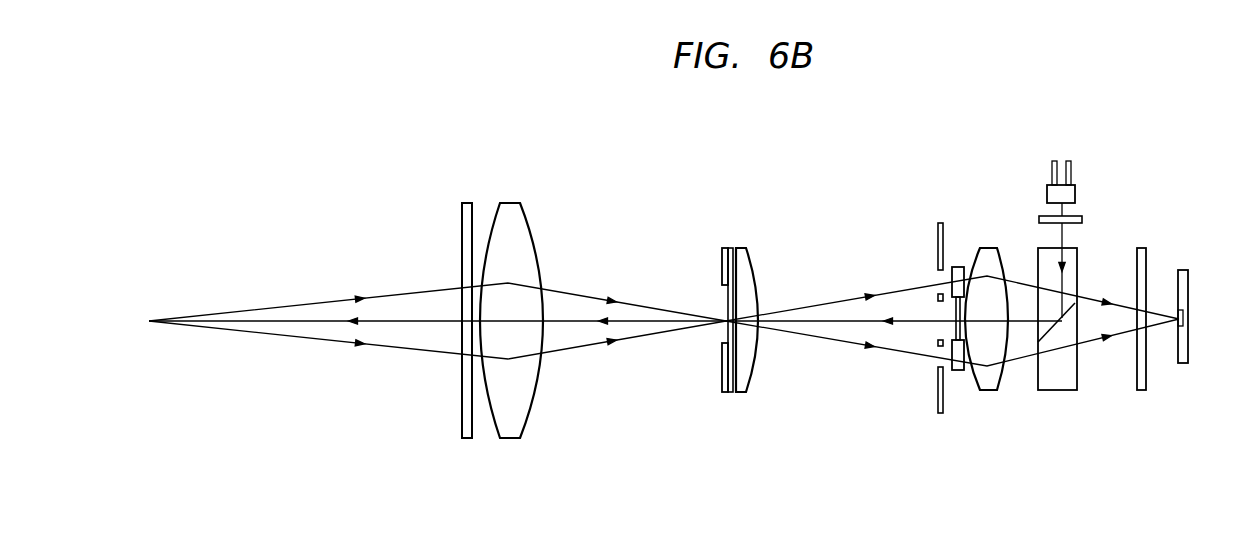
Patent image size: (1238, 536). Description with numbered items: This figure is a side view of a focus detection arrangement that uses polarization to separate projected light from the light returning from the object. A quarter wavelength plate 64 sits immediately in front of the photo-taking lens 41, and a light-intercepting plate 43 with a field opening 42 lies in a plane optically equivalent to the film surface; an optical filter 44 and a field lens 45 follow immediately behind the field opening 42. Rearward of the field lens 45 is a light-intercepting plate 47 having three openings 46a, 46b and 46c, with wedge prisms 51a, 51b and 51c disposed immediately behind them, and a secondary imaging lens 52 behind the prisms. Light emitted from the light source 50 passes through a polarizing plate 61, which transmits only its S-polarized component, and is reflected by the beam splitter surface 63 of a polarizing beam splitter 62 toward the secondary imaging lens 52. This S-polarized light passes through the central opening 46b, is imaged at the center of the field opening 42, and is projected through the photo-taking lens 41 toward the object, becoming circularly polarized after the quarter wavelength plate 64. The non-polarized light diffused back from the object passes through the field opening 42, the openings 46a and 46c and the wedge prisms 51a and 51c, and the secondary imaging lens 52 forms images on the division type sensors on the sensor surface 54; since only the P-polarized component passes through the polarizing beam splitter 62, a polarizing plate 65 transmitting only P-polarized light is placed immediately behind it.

The photo-taking lens 41 is at (510, 205).
The field opening 42 is at (723, 303).
The light-intercepting plate 43 is at (723, 260).
The optical filter 44 is at (723, 332).
The field lens 45 is at (745, 277).
The opening 46a is at (939, 278).
The central opening 46b is at (935, 325).
The opening 46c is at (937, 357).
The light-intercepting plate 47 is at (939, 232).
The light source 50 is at (1077, 190).
The wedge prism 51a is at (956, 268).
The wedge prism 51b is at (953, 328).
The wedge prism 51c is at (957, 372).
The secondary imaging lens 52 is at (995, 378).
The sensor surface 54 is at (1183, 363).
The polarizing plate 61 is at (1082, 218).
The polarizing beam splitter 62 is at (1062, 383).
The beam splitter surface 63 is at (1070, 317).
The quarter wavelength plate 64 is at (463, 203).
The polarizing plate 65 is at (1147, 257).